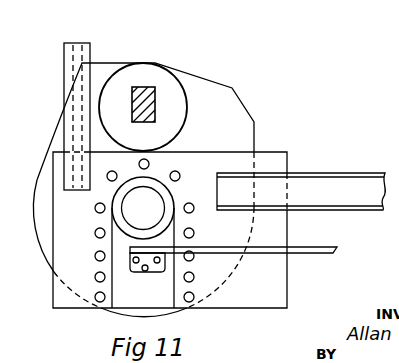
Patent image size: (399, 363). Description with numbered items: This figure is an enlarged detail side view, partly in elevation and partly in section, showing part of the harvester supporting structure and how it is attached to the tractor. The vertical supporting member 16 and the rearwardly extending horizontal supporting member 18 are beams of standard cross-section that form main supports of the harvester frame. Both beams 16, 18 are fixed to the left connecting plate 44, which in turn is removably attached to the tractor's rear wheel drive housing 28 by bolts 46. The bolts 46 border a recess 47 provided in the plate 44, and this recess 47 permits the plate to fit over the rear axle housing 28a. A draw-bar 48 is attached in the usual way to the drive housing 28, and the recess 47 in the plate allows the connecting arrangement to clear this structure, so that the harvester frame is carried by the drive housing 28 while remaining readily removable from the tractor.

The vertical supporting member 16 is at (85, 48).
The horizontal supporting member 18 is at (357, 182).
The rear wheel drive housing 28 is at (236, 124).
The rear axle housing 28a is at (153, 207).
The connecting plate 44 is at (68, 235).
The bolt 46 is at (194, 233).
The recess 47 is at (117, 243).
The draw-bar 48 is at (200, 249).